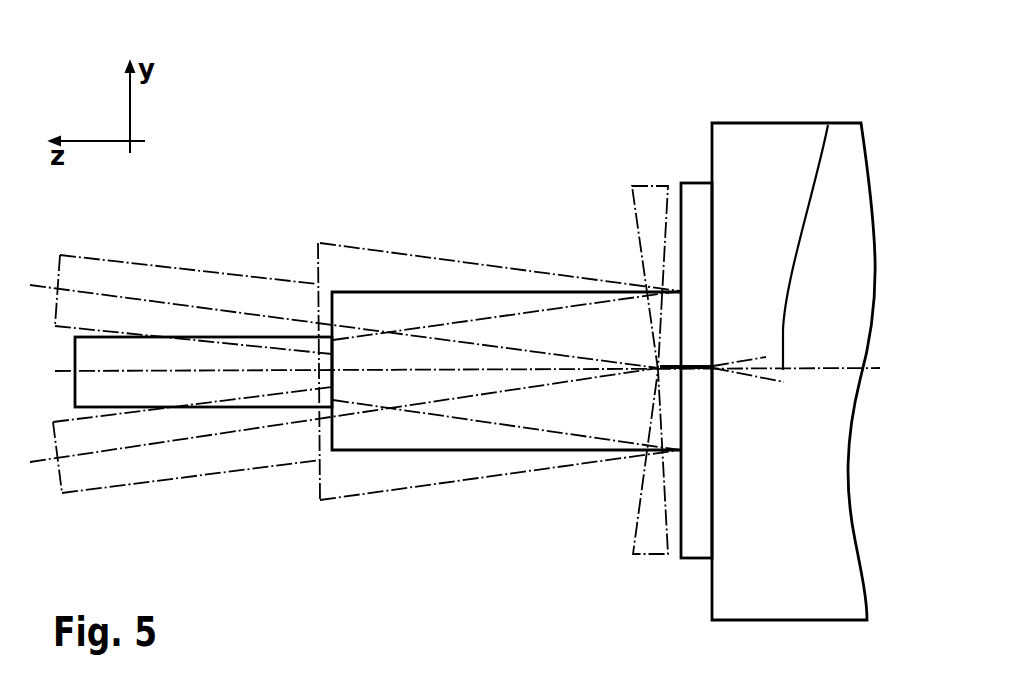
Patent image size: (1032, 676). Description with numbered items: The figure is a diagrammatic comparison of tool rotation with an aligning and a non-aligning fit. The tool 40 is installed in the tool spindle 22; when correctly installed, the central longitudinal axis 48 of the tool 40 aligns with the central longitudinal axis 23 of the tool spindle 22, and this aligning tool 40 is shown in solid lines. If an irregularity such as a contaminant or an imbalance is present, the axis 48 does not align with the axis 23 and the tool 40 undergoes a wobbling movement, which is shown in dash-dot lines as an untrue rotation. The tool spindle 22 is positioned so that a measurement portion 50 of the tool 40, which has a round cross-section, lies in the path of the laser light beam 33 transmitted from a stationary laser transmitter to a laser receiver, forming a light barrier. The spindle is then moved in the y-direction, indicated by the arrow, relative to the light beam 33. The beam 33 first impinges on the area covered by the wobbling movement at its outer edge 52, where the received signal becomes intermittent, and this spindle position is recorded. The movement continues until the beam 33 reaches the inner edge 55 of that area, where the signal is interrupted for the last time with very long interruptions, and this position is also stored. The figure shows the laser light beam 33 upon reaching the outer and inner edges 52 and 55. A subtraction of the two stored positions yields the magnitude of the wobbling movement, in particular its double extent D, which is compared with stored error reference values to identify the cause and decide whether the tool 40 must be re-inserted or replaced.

The tool spindle 22 is at (760, 135).
The central longitudinal axis of the tool spindle 23 is at (828, 125).
The laser light beam 33 is at (500, 317).
The tool 40 is at (234, 420).
The central longitudinal axis of the tool 48 is at (90, 452).
The measurement portion 50 is at (398, 302).
The outer edge 52 is at (495, 266).
The inner edge 55 is at (500, 317).
The double extent of the wobbling movement D is at (490, 312).